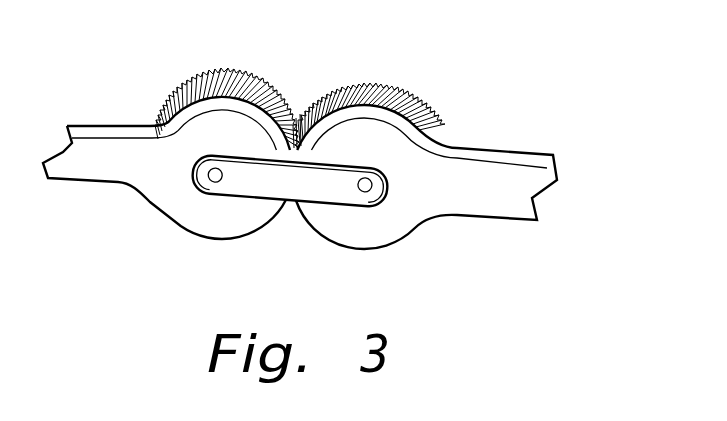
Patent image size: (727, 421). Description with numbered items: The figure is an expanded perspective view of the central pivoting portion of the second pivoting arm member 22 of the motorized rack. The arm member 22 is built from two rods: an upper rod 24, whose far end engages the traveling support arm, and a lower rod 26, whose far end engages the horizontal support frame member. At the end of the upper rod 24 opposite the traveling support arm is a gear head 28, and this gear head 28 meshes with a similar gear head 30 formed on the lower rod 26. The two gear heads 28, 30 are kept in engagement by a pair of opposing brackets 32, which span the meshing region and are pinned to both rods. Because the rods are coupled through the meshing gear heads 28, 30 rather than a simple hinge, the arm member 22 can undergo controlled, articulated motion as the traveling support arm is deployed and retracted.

The second pivoting arm member 22 is at (308, 91).
The upper rod 24 is at (108, 132).
The lower rod 26 is at (550, 175).
The gear head 28 is at (241, 68).
The gear head 30 is at (428, 116).
The opposing brackets 32 is at (291, 188).